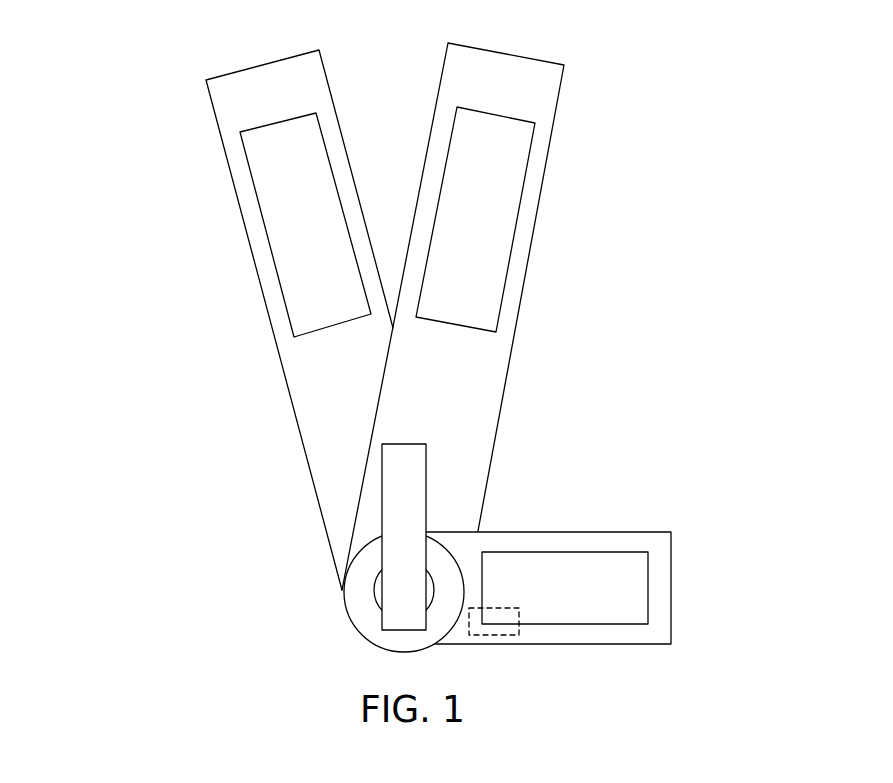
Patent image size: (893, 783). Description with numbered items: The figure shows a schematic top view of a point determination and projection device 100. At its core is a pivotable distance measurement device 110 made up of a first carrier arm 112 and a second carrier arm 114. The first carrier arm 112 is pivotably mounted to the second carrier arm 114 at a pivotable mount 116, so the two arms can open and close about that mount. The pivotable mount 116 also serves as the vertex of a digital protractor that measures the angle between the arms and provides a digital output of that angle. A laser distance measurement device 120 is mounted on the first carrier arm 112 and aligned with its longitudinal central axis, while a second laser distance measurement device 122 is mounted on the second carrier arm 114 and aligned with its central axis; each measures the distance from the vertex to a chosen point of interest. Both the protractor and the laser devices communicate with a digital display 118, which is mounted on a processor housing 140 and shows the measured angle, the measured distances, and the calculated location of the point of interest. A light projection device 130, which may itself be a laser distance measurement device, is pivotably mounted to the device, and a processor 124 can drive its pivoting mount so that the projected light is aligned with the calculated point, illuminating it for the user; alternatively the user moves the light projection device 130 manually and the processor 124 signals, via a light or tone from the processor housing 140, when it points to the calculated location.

The point determination and projection device 100 is at (565, 313).
The pivotable distance measurement device 110 is at (254, 385).
The first carrier arm 112 is at (540, 83).
The second carrier arm 114 is at (235, 95).
The pivotable mount 116 is at (372, 621).
The digital display 118 is at (608, 568).
The laser distance measurement device 120 is at (517, 158).
The second laser distance measurement device 122 is at (262, 153).
The processor 124 is at (490, 631).
The light projection device 130 is at (400, 552).
The processor housing 140 is at (655, 633).